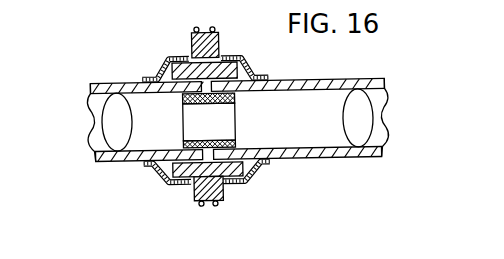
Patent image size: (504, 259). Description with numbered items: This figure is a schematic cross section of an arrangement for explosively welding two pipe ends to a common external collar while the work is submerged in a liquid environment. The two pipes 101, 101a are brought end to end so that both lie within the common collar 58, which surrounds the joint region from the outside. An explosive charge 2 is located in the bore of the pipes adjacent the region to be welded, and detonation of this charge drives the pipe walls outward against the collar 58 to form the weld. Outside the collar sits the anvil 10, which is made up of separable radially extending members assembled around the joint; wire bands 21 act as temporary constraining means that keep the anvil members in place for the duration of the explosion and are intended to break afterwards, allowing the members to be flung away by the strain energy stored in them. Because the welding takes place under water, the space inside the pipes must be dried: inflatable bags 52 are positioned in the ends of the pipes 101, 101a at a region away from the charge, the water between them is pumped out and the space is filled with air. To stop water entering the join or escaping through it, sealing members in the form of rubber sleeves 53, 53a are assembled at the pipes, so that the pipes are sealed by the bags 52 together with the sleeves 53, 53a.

The explosive charge 2 is at (204, 104).
The anvil 10 is at (192, 42).
The wire bands 21 is at (214, 27).
The inflatable bags 52 is at (101, 124).
The rubber sleeve 53 is at (163, 177).
The rubber sleeve 53a is at (250, 180).
The common collar 58 is at (166, 181).
The pipe 101 is at (100, 83).
The pipe 101a is at (326, 79).